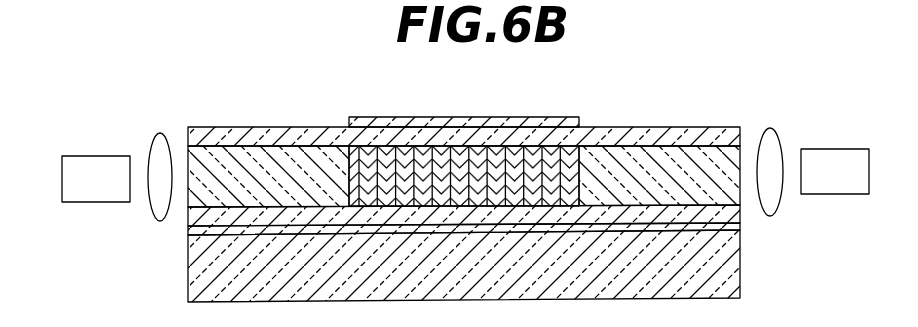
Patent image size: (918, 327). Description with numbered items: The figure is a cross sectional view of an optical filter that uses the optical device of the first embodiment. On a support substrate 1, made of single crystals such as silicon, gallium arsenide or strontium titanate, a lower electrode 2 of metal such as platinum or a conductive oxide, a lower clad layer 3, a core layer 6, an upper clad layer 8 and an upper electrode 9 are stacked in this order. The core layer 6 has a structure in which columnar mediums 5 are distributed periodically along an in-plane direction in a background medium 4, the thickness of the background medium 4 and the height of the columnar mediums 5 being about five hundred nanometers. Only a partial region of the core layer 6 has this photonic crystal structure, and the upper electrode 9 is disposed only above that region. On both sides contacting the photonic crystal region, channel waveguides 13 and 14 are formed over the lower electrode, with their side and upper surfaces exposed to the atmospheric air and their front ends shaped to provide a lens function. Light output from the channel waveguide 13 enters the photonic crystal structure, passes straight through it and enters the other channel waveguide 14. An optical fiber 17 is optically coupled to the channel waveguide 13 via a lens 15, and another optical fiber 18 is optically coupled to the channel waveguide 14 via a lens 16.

The support substrate 1 is at (496, 266).
The lower electrode 2 is at (495, 246).
The lower clad layer 3 is at (495, 223).
The background medium 4 is at (440, 125).
The columnar mediums 5 is at (440, 125).
The core layer 6 is at (420, 215).
The upper clad layer 8 is at (459, 102).
The upper electrode 9 is at (483, 97).
The channel waveguide 13 is at (459, 102).
The channel waveguide 14 is at (494, 81).
The lens 15 is at (117, 144).
The lens 16 is at (805, 134).
The optical fiber 17 is at (76, 141).
The optical fiber 18 is at (849, 134).